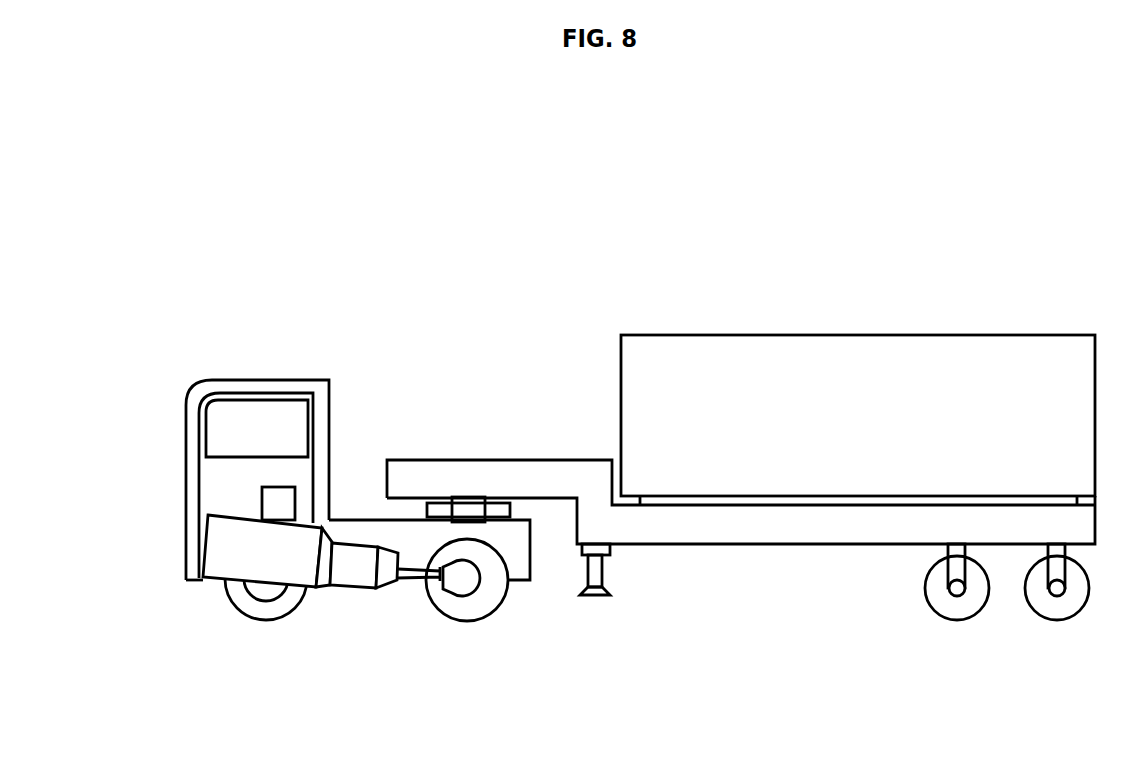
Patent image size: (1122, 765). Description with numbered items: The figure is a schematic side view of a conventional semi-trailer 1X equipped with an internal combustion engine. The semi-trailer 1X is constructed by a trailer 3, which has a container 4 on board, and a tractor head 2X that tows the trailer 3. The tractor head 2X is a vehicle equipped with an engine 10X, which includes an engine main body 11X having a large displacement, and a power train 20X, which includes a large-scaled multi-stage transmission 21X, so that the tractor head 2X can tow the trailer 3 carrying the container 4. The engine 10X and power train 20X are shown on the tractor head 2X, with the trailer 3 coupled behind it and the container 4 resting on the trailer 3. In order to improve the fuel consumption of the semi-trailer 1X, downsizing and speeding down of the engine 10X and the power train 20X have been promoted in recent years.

The semi-trailer 1X is at (447, 357).
The tractor head 2X is at (278, 378).
The trailer 3 is at (593, 457).
The container 4 is at (872, 337).
The engine 10X is at (217, 550).
The engine main body 11X is at (265, 583).
The power train 20X is at (355, 550).
The multi-stage transmission 21X is at (358, 587).